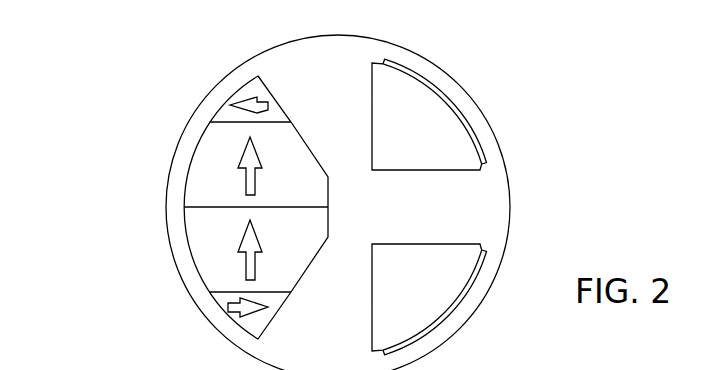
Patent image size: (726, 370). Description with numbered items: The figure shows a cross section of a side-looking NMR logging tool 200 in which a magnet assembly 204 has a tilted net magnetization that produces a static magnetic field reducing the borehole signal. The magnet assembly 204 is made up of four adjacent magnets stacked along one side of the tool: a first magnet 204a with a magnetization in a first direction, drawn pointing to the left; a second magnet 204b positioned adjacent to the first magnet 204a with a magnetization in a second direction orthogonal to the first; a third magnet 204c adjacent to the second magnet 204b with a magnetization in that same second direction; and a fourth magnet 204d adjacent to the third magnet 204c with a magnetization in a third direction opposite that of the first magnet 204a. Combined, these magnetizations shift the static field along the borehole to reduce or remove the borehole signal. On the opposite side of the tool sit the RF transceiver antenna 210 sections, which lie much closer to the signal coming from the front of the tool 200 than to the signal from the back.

The NMR logging tool 200 is at (428, 60).
The magnet assembly 204 is at (185, 207).
The first magnet 204a is at (234, 92).
The second magnet 204b is at (190, 163).
The third magnet 204c is at (190, 250).
The fourth magnet 204d is at (230, 323).
The RF transceiver antenna 210 is at (444, 150).